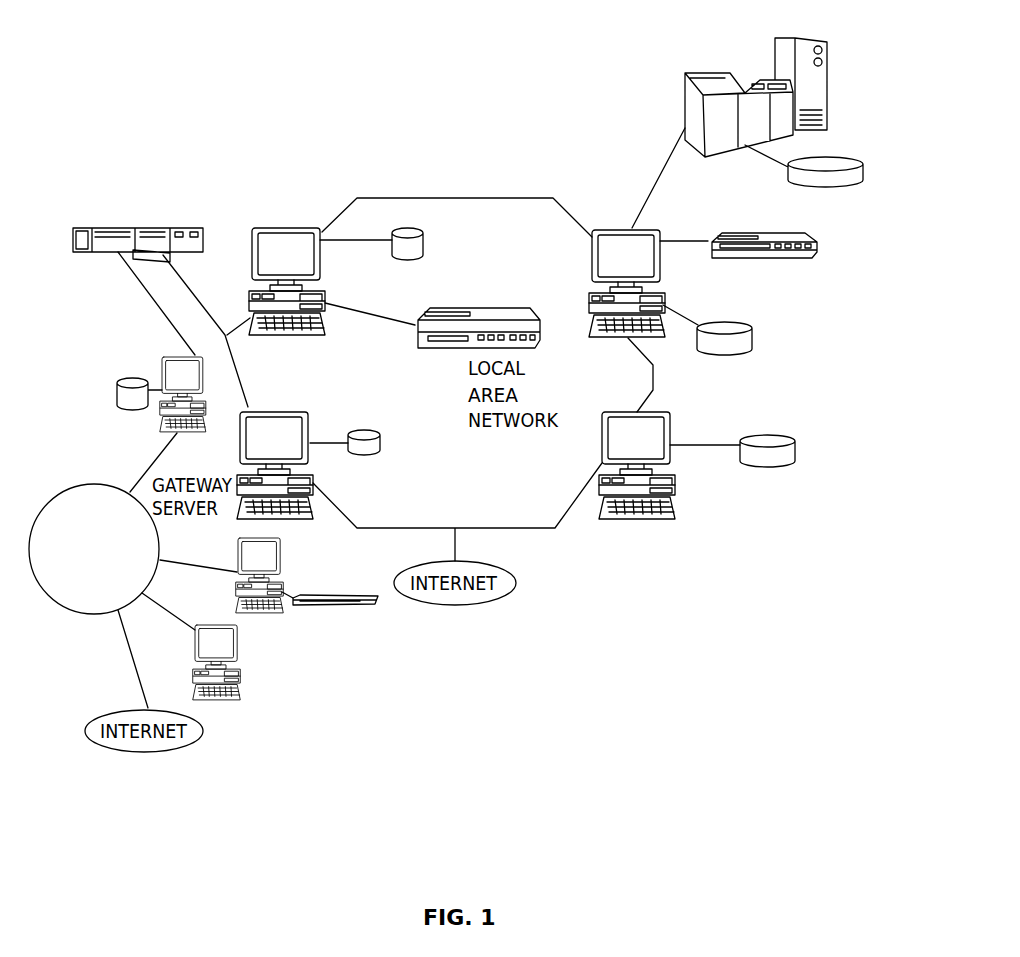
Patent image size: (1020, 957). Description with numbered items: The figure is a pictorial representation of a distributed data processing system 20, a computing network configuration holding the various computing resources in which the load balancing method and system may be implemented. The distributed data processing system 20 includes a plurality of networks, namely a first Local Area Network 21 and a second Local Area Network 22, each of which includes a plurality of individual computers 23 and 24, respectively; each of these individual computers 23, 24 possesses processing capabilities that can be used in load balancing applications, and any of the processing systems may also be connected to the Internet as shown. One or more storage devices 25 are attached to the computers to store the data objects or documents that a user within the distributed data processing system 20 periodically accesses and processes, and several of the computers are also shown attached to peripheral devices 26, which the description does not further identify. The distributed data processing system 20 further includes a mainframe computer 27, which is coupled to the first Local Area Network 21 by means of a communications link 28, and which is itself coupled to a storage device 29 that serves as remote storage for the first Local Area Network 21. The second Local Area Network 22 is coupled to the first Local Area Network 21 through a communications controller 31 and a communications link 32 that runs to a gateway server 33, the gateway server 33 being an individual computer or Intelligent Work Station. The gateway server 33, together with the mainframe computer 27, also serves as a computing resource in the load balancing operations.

The distributed data processing system 20 is at (458, 174).
The local area network 21 is at (555, 528).
The local area network 22 is at (93, 483).
The individual computer 23 is at (275, 228).
The individual computer 24 is at (280, 544).
The storage device 25 is at (423, 250).
The printer 26 is at (477, 310).
The mainframe computer 27 is at (742, 55).
The communications link 28 is at (662, 165).
The storage device 29 is at (818, 160).
The communications controller 31 is at (200, 233).
The communications link 32 is at (148, 297).
The gateway server 33 is at (163, 358).